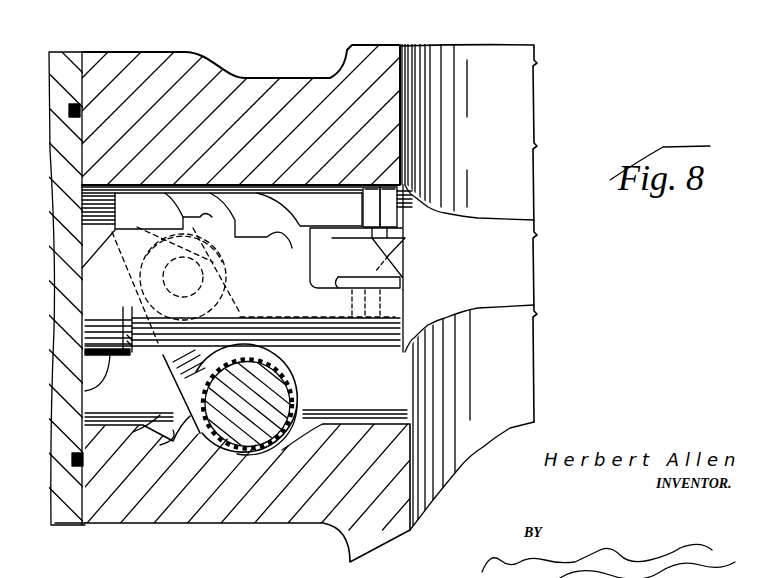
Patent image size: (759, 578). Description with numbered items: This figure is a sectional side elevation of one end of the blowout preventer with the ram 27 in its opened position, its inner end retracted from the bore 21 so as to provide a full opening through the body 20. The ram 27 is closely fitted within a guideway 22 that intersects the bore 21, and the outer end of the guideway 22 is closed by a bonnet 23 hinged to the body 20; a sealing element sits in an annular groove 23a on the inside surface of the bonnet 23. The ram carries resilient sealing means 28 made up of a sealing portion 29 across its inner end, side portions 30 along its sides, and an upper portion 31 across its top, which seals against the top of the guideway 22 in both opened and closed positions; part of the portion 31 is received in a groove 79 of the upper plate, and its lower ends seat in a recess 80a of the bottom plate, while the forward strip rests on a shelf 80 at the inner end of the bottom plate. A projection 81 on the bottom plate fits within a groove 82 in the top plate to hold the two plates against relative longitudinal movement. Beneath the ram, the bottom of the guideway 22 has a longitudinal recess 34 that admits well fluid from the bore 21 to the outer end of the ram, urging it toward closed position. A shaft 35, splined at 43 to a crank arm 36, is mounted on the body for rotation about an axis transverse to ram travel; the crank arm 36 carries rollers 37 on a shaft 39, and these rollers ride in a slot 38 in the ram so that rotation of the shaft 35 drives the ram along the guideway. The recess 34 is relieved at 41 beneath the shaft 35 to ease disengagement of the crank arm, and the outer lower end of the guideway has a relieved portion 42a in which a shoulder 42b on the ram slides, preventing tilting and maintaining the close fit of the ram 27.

The body 20 is at (250, 78).
The bore 21 is at (400, 62).
The guideway 22 is at (78, 205).
The bonnet 23 is at (65, 52).
The annular groove 23a is at (74, 458).
The ram 27 is at (275, 278).
The resilient sealing means 28 is at (297, 212).
The sealing portion 29 is at (405, 268).
The side sealing portions 30 is at (353, 260).
The upper sealing portion 31 is at (271, 226).
The recess or slot 34 is at (344, 420).
The shaft 35 is at (280, 370).
The crank arm 36 is at (170, 365).
The rollers 37 is at (130, 292).
The slot 38 is at (149, 211).
The shaft 39 is at (212, 262).
The relieved portion 41 is at (173, 430).
The relieved portion 42a is at (85, 353).
The shoulder 42b is at (85, 391).
The splined portion 43 is at (298, 408).
The groove 79 is at (228, 210).
The shelf 80 is at (313, 288).
The recess 80a is at (303, 266).
The projection 81 is at (163, 188).
The groove 82 is at (183, 228).